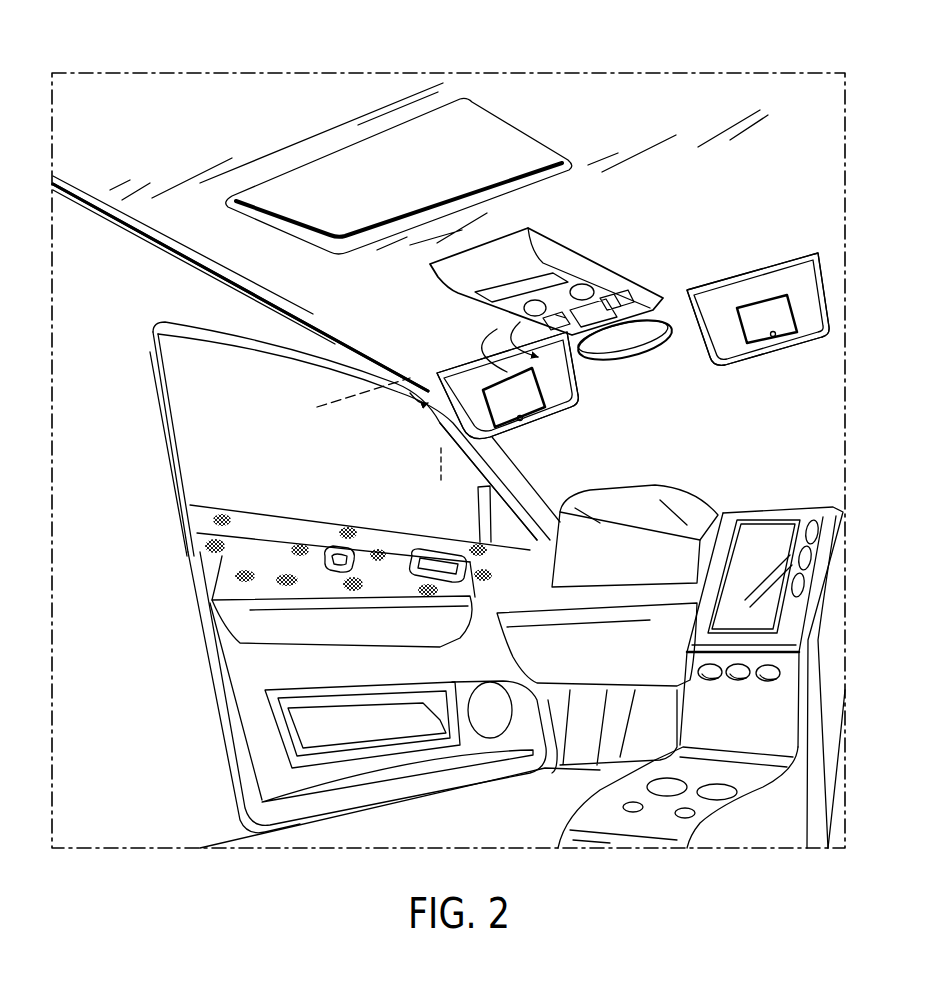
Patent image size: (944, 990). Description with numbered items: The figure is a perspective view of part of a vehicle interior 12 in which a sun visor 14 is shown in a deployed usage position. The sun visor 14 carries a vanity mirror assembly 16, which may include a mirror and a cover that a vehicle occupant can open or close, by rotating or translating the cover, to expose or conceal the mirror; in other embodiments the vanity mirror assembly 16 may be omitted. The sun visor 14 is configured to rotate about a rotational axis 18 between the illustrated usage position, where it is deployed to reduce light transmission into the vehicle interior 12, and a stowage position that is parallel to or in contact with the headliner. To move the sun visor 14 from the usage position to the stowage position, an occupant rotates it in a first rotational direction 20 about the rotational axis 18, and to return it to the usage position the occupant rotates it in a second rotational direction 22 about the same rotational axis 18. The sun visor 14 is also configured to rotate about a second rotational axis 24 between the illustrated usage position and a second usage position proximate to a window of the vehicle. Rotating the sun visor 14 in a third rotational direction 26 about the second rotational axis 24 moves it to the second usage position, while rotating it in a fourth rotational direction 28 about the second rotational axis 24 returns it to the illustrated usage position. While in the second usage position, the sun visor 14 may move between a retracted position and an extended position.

The vehicle interior 12 is at (177, 106).
The sun visor 14 is at (557, 420).
The vanity mirror assembly 16 is at (467, 409).
The rotational axis 18 is at (343, 397).
The first rotational direction 20 is at (497, 334).
The second rotational direction 22 is at (545, 393).
The second rotational axis 24 is at (440, 467).
The third rotational direction 26 is at (465, 397).
The fourth rotational direction 28 is at (457, 453).